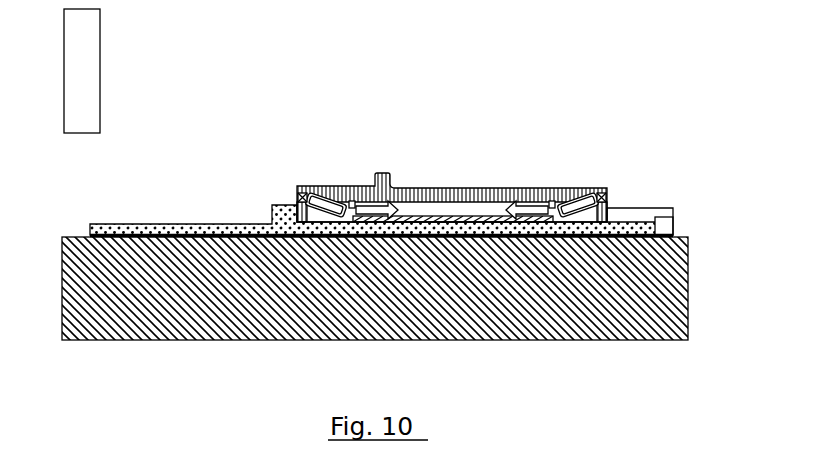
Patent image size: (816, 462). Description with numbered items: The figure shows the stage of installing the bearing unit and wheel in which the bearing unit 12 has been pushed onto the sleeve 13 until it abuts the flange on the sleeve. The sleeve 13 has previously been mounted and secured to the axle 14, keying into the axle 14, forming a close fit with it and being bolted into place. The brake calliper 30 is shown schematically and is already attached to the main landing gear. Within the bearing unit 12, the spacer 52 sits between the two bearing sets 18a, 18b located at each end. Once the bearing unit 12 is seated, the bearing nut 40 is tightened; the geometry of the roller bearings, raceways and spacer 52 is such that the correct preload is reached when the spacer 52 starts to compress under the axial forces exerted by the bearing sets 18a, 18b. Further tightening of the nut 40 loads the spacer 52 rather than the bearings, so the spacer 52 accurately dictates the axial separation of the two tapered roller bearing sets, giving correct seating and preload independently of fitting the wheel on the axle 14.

The bearing unit 12 is at (460, 135).
The sleeve 13 is at (89, 224).
The axle 14 is at (148, 318).
The first bearing set 18a is at (294, 196).
The second bearing set 18b is at (609, 187).
The brake calliper 30 is at (85, 113).
The bearing nut 40 is at (660, 218).
The spacer 52 is at (400, 188).